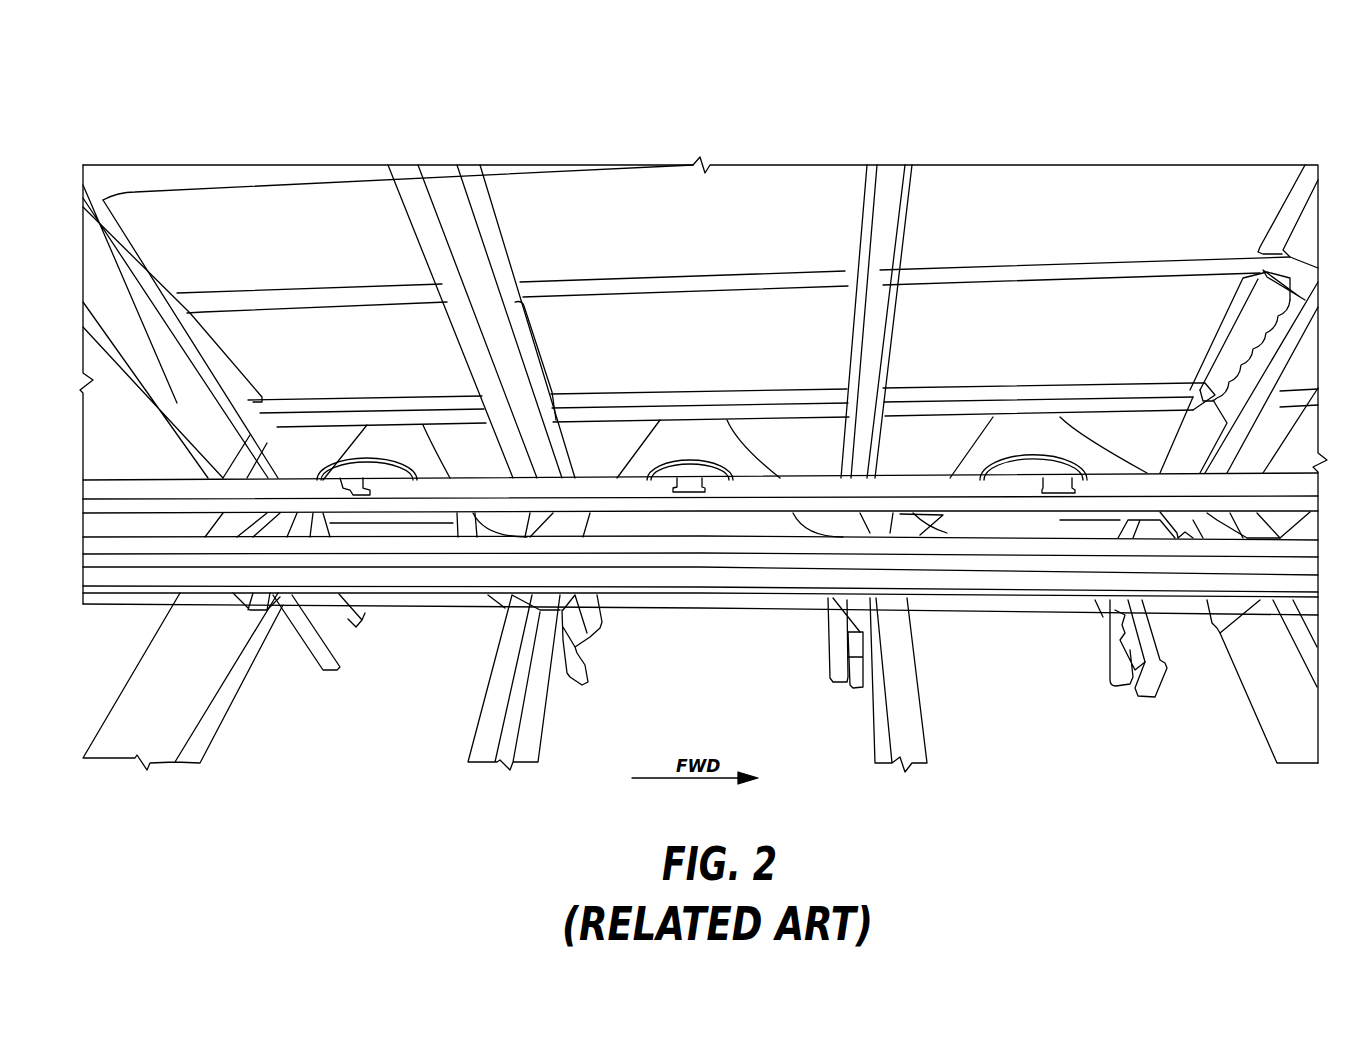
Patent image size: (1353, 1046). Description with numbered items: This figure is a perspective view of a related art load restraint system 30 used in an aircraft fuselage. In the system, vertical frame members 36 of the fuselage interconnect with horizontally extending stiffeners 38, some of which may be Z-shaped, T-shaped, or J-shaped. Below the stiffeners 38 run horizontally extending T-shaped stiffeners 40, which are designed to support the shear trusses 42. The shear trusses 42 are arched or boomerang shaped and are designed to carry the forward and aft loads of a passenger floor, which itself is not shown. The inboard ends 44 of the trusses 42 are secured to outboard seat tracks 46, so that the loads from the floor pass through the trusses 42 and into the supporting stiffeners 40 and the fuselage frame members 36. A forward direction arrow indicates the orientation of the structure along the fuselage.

The load restraint system 30 is at (903, 108).
The vertical frame members 36 is at (462, 239).
The stiffeners 38 is at (1107, 265).
The T-shaped stiffeners 40 is at (1107, 390).
The shear trusses 42 is at (357, 444).
The inboard ends 44 is at (927, 525).
The outboard seat tracks 46 is at (463, 560).